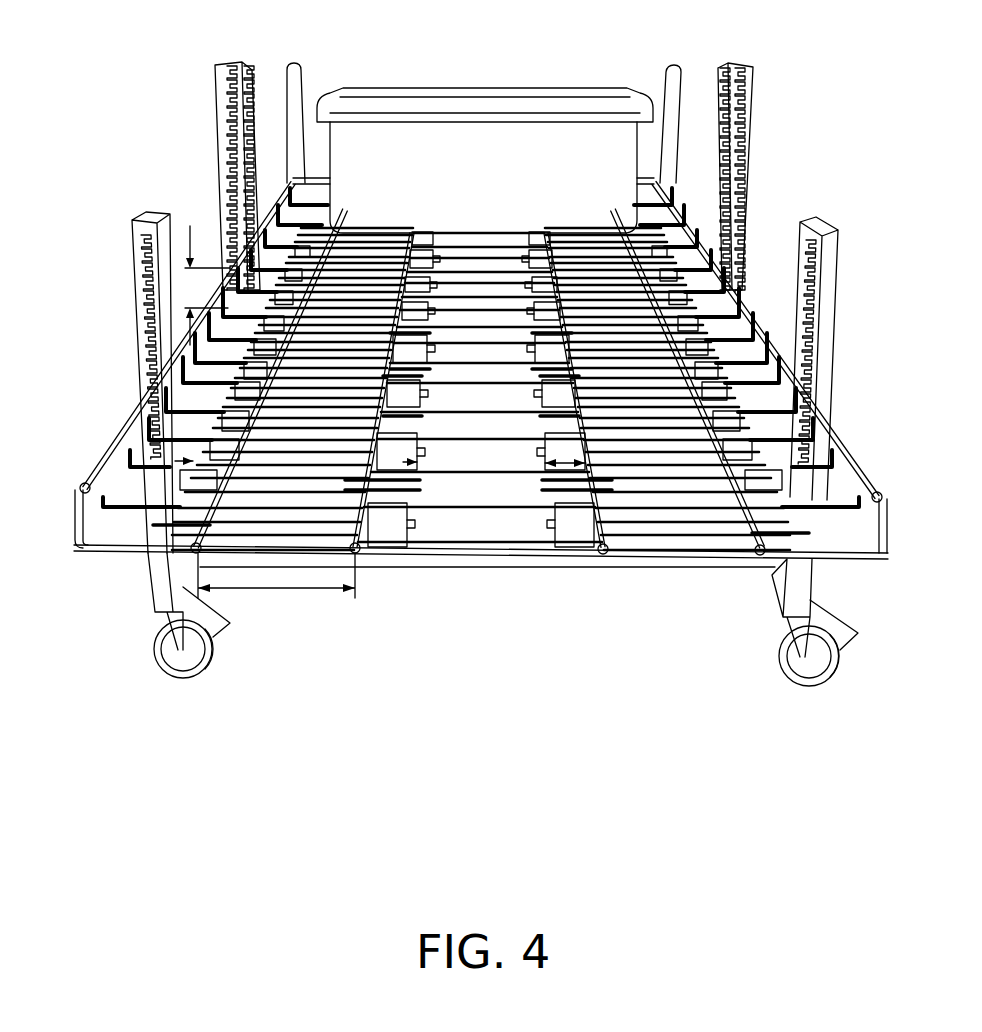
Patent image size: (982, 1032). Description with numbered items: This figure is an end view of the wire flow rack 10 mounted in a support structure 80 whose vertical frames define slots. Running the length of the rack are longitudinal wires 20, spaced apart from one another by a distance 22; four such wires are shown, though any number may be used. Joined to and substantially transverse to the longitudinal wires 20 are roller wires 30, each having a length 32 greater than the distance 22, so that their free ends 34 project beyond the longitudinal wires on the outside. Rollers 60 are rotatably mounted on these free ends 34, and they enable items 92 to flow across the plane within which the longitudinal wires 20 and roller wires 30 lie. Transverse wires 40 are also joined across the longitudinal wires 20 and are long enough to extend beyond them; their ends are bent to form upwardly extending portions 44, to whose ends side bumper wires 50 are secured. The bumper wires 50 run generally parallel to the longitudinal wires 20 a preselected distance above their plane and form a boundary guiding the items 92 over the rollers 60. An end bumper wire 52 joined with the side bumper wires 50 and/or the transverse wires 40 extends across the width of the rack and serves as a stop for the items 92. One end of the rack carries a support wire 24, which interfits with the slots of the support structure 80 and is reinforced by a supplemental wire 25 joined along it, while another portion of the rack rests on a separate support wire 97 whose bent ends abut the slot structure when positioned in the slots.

The flow rack 10 is at (567, 608).
The longitudinal wires 20 is at (560, 233).
The distance 22 is at (281, 591).
The support wire 24 is at (318, 192).
The supplemental wire 25 is at (663, 183).
The roller wires 30 is at (667, 495).
The length 32 is at (300, 462).
The free ends 34 is at (570, 468).
The transverse wires 40 is at (520, 552).
The upwardly extending portions 44 is at (198, 267).
The bumper wires 50 is at (758, 290).
The end bumper wires 52 is at (652, 178).
The rollers 60 is at (418, 348).
The support structure 80 is at (205, 150).
The items 92 is at (508, 95).
The support wire 97 is at (787, 403).